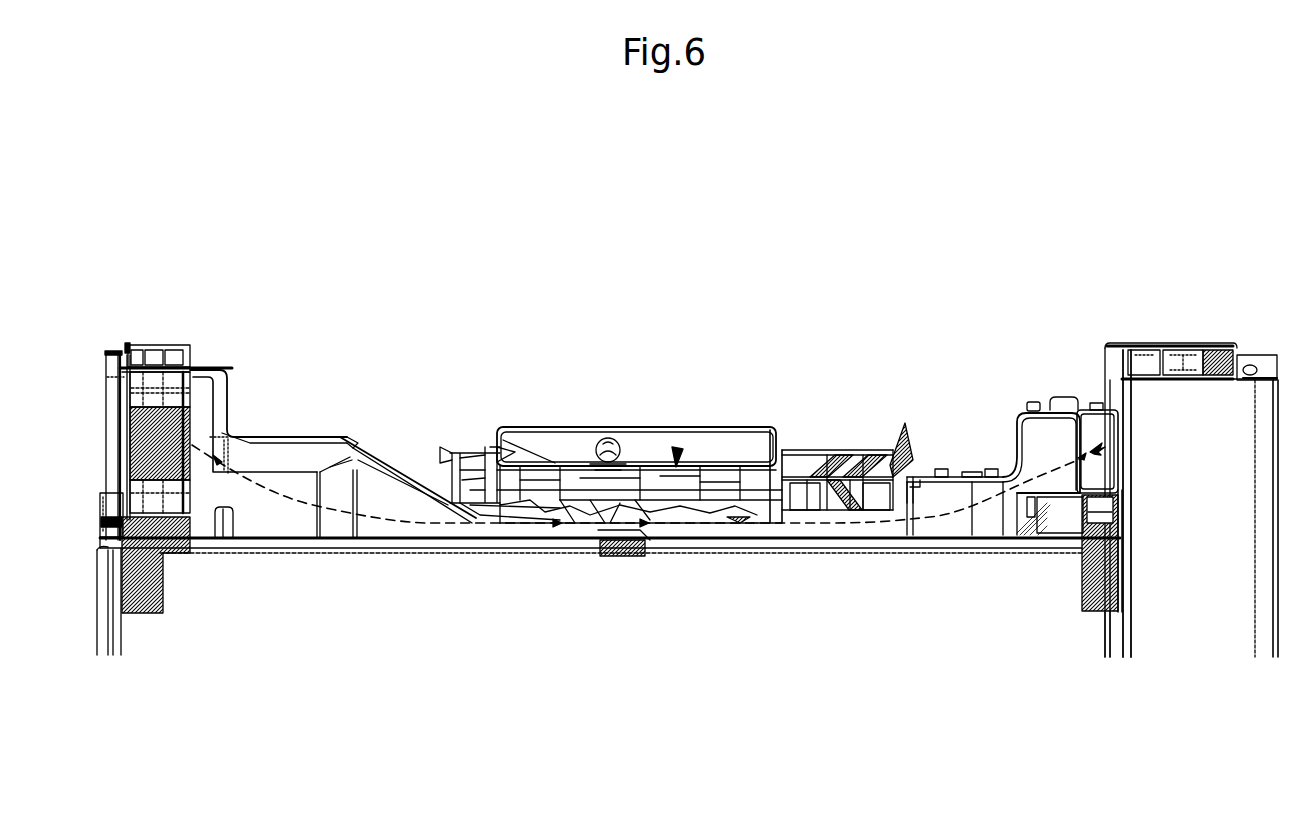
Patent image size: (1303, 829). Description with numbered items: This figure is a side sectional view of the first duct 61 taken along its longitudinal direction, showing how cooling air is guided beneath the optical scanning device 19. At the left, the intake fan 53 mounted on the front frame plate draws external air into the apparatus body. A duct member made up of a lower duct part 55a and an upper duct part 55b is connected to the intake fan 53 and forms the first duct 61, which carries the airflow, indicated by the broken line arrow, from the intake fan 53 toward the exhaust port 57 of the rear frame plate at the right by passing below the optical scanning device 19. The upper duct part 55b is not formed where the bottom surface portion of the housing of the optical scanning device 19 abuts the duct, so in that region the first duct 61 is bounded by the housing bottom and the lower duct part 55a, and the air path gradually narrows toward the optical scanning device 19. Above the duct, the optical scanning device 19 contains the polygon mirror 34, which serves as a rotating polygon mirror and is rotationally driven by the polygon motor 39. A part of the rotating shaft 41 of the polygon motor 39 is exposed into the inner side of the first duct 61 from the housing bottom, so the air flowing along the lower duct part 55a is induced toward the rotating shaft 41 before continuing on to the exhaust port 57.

The optical scanning device 19 is at (744, 411).
The polygon mirror 34 is at (636, 458).
The polygon motor 39 is at (583, 470).
The rotating shaft 41 is at (617, 548).
The intake fan 53 is at (120, 398).
The lower duct part 55a is at (405, 548).
The upper duct part 55b is at (393, 450).
The exhaust port 57 is at (1123, 457).
The first duct 61 is at (291, 526).